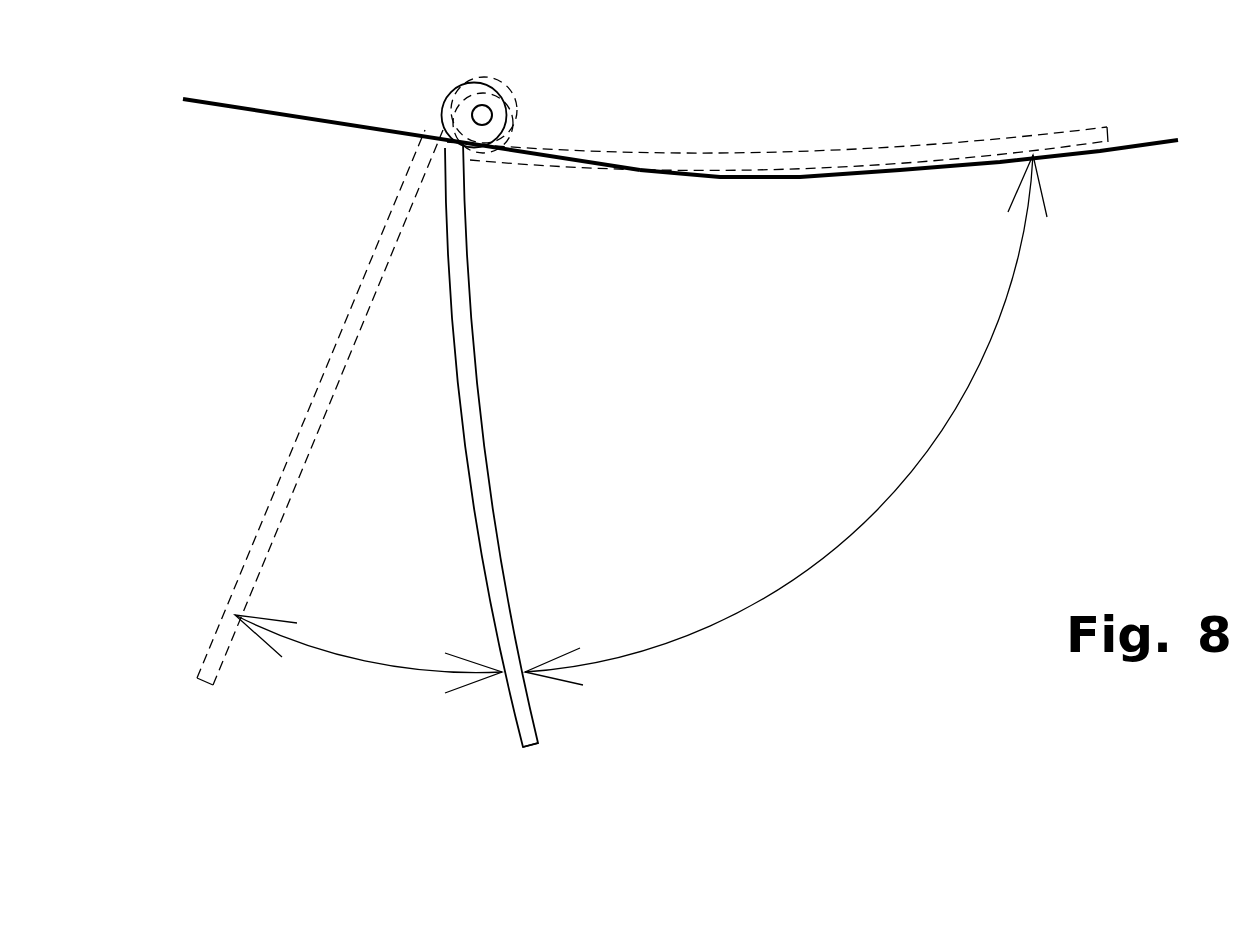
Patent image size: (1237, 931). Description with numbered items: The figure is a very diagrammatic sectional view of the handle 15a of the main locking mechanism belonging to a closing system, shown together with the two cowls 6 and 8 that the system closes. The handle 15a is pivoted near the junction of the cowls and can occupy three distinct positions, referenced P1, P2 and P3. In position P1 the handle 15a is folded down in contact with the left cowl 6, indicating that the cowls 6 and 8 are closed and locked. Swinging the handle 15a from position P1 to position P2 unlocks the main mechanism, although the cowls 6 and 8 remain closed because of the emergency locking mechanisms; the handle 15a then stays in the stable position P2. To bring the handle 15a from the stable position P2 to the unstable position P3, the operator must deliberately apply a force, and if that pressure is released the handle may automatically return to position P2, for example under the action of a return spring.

The cowl 8 is at (317, 117).
The left cowl 6 is at (1152, 145).
The handle 15a is at (533, 748).
The position P1 is at (786, 125).
The stable position P2 is at (561, 740).
The unstable position P3 is at (301, 431).